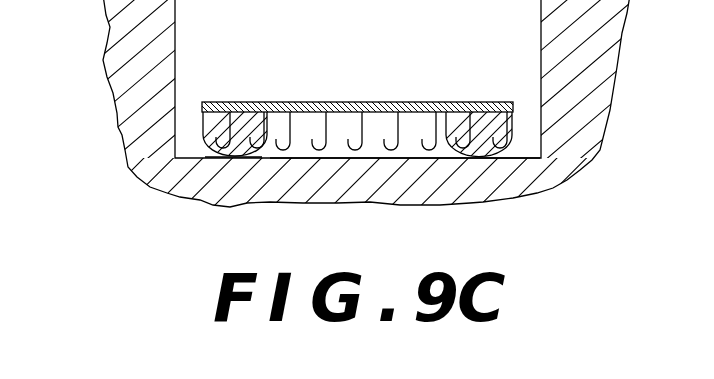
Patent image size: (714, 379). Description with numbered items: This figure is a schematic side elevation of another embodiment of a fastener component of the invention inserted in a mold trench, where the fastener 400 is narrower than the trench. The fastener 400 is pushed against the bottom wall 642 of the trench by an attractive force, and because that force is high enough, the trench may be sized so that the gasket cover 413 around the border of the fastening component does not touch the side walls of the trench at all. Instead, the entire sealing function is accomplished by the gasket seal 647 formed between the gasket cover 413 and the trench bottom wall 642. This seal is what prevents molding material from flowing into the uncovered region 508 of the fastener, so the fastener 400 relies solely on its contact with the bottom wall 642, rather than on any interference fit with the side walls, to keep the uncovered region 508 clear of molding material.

The fastener 400 is at (382, 90).
The gasket cover 413 is at (218, 132).
The uncovered region 508 is at (408, 145).
The gasket seal 647 is at (233, 157).
The bottom wall 642 is at (423, 158).